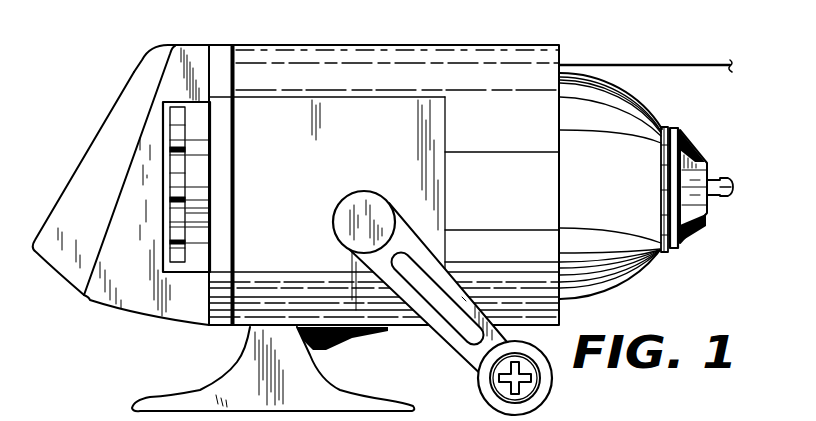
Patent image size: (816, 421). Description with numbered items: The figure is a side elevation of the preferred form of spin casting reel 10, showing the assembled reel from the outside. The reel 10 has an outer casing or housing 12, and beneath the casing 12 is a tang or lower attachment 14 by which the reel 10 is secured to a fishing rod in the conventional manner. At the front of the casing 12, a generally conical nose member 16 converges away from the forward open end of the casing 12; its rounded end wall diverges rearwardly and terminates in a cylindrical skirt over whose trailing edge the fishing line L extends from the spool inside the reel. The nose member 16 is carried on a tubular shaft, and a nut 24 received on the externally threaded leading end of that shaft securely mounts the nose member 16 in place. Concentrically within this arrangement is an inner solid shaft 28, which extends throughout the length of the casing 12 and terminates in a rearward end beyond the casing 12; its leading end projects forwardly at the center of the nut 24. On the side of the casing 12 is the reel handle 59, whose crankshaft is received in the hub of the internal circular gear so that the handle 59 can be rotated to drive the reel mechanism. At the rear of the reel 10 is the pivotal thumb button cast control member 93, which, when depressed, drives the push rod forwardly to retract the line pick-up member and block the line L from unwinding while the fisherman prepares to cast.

The spin casting reel 10 is at (109, 107).
The outer casing 12 is at (283, 44).
The tang 14 is at (227, 377).
The nose member 16 is at (645, 269).
The nut 24 is at (686, 138).
The inner concentric solid shaft 28 is at (734, 187).
The reel handle 59 is at (551, 386).
The thumb button control member 93 is at (64, 189).
The fishing line L is at (687, 64).